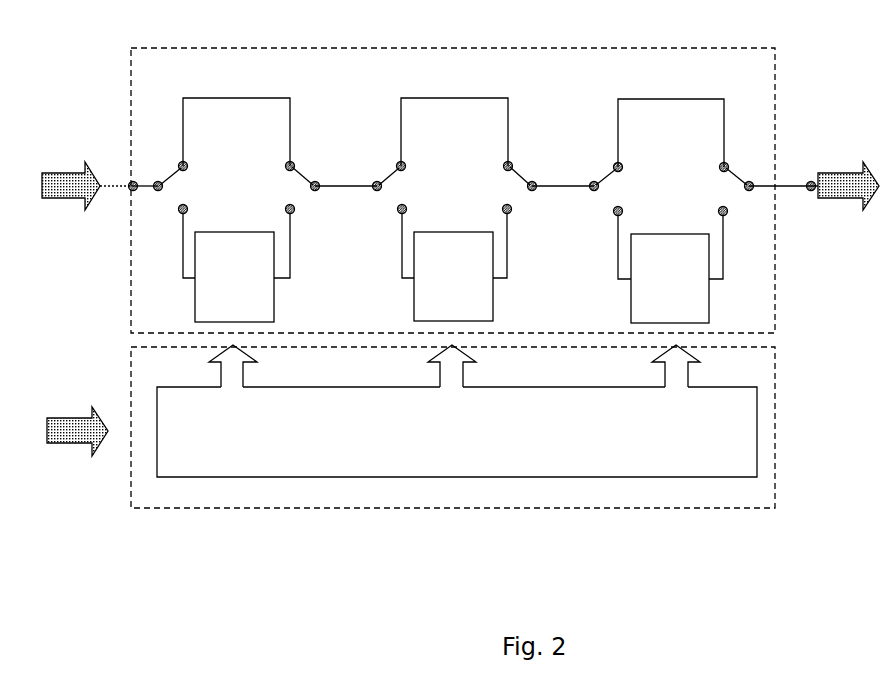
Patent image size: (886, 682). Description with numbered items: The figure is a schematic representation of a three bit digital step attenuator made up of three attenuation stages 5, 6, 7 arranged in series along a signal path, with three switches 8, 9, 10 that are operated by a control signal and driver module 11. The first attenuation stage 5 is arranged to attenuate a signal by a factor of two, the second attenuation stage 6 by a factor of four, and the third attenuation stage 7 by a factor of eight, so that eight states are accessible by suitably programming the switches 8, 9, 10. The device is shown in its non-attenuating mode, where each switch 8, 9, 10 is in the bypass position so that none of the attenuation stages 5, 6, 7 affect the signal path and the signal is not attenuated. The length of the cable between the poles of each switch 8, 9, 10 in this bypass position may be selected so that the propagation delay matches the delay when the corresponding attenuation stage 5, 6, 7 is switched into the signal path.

The first attenuation stage 5 is at (237, 264).
The second attenuation stage 6 is at (455, 263).
The third attenuation stage 7 is at (671, 265).
The switch 8 is at (310, 95).
The switch 9 is at (382, 97).
The switch 10 is at (598, 99).
The control signal and driver module 11 is at (457, 411).